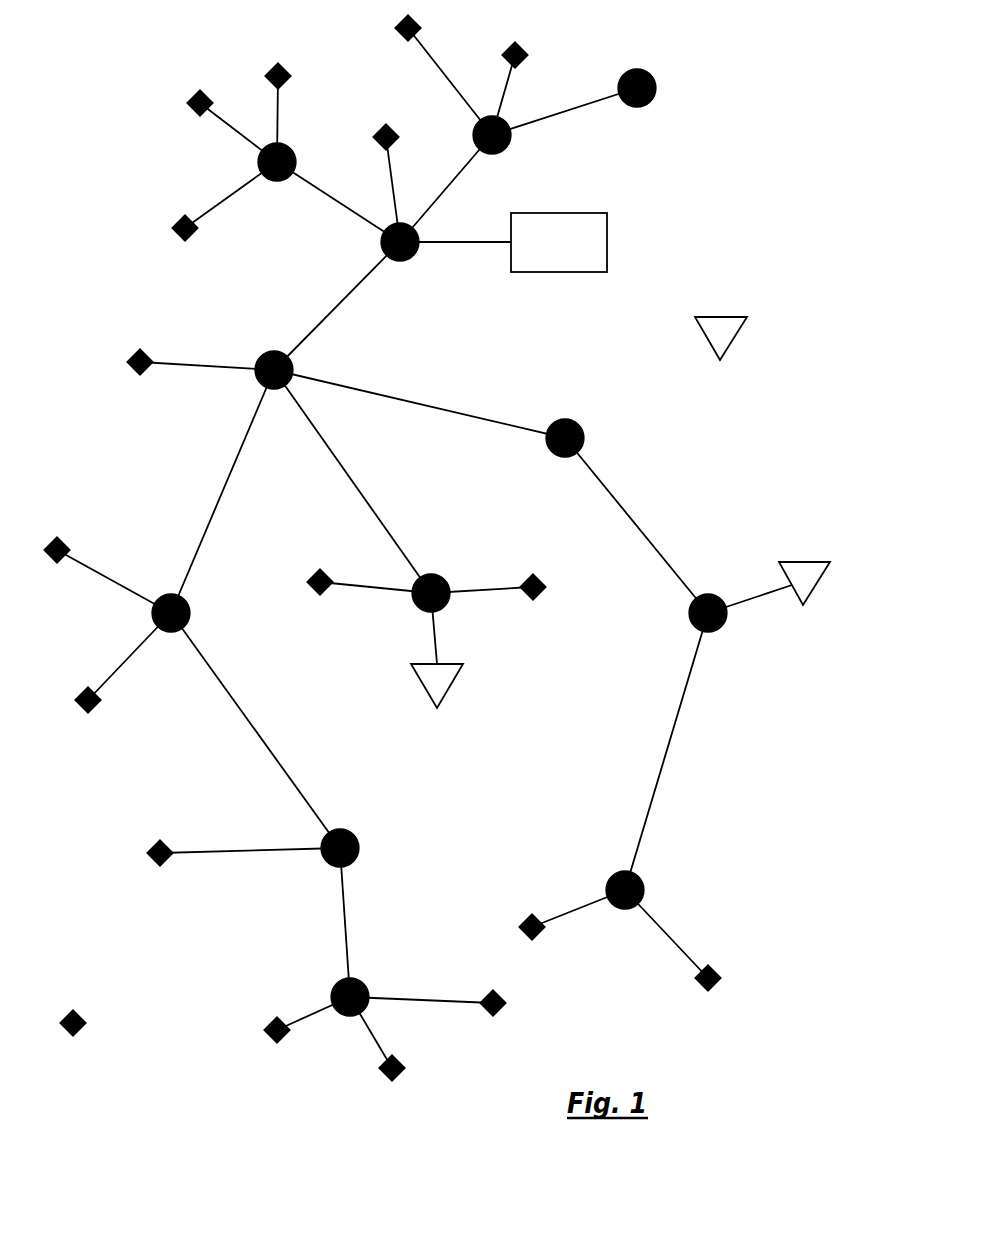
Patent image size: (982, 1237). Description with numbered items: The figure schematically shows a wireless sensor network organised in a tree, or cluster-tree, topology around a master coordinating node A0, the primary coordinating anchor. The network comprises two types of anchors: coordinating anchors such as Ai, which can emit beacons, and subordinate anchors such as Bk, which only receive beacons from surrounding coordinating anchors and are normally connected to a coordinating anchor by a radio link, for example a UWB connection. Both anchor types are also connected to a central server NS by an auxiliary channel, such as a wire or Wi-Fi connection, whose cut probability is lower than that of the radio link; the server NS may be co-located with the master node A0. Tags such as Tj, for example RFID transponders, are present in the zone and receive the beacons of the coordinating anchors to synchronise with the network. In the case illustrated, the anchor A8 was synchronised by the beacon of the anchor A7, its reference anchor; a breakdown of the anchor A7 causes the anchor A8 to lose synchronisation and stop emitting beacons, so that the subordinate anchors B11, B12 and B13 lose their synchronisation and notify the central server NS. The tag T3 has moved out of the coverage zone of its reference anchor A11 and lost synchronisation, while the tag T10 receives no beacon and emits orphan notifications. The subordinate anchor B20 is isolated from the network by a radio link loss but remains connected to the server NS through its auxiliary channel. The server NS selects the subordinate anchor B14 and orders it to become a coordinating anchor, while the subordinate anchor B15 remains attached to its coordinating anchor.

The master coordinating node A0 is at (416, 267).
The central server NS is at (559, 242).
The coordinating anchor Ai is at (588, 438).
The anchor A7 is at (363, 846).
The anchor A8 is at (372, 981).
The anchor A11 is at (444, 570).
The subordinate anchor Bk is at (57, 529).
The subordinate anchor B11 is at (248, 1036).
The subordinate anchor B12 is at (400, 1091).
The subordinate anchor B13 is at (511, 1025).
The subordinate anchor B14 is at (554, 945).
The subordinate anchor B15 is at (719, 1004).
The isolated subordinate anchor B20 is at (67, 994).
The tag T3 is at (457, 691).
The tag T10 is at (735, 314).
The tag Tj is at (790, 562).